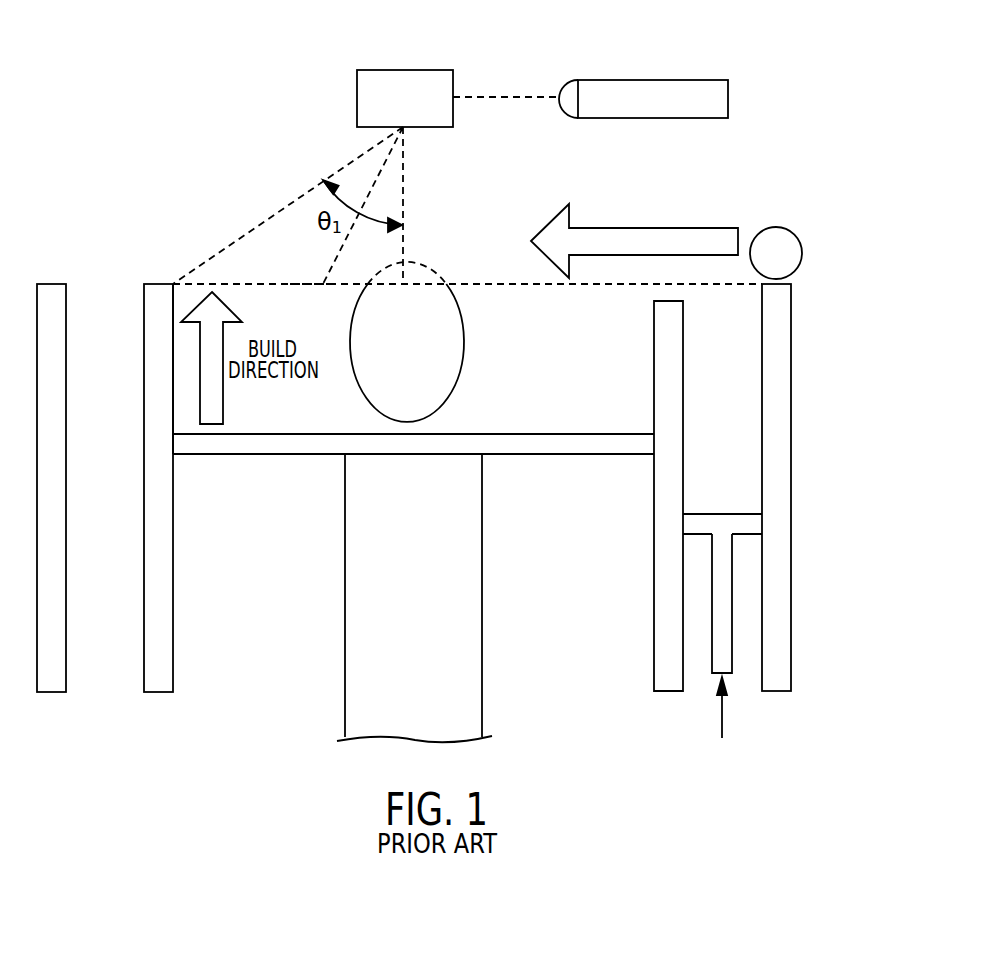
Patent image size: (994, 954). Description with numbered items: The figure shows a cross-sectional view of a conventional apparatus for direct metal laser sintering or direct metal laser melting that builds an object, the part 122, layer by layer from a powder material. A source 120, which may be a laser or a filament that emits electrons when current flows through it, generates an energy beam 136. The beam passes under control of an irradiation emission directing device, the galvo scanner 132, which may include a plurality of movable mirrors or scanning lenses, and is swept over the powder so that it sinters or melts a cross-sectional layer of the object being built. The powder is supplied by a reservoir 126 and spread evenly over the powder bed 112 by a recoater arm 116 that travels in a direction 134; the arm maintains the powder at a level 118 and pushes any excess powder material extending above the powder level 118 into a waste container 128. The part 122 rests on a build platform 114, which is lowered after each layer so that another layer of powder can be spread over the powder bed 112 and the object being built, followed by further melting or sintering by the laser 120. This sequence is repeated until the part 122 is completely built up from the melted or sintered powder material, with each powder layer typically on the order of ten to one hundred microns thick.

The powder bed 112 is at (505, 303).
The build platform 114 is at (607, 434).
The recoater arm 116 is at (776, 228).
The powder level 118 is at (297, 283).
The source 120 is at (627, 80).
The part 122 is at (351, 340).
The reservoir 126 is at (743, 367).
The waste container 128 is at (128, 585).
The galvo scanner 132 is at (401, 70).
The direction 134 is at (548, 225).
The energy beam 136 is at (363, 203).